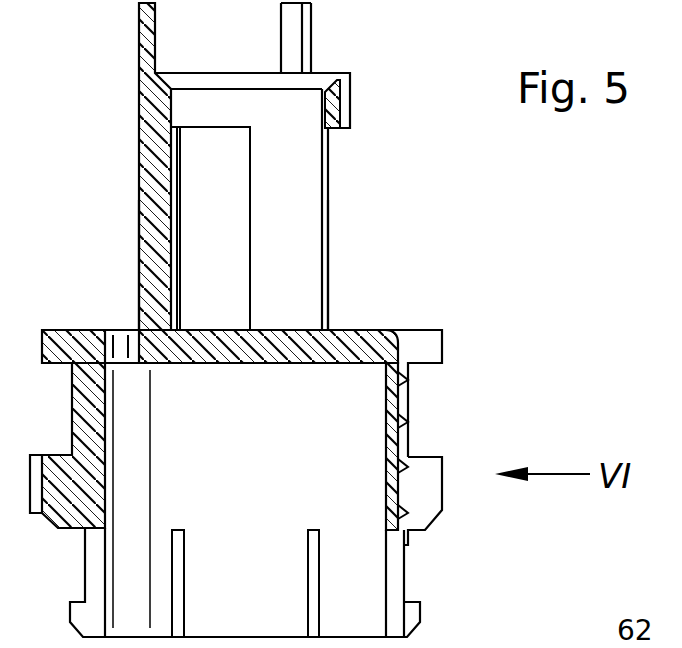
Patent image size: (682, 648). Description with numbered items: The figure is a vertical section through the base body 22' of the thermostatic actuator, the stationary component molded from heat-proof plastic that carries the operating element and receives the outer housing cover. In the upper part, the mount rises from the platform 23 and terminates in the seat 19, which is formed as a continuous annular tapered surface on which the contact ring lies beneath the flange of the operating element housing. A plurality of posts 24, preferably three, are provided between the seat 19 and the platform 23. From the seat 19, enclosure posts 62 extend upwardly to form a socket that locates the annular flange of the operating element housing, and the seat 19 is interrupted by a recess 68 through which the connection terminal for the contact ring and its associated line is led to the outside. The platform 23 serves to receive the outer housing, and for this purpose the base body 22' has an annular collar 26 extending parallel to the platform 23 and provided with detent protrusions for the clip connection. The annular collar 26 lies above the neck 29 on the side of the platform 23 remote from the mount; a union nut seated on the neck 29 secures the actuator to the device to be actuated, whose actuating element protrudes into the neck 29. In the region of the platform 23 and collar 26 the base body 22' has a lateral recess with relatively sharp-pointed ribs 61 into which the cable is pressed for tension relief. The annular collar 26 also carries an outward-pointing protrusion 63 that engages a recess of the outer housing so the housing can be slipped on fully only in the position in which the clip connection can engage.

The enclosure posts 62 is at (146, 22).
The seat 19 is at (197, 100).
The recess 68 is at (336, 82).
The base body 22' is at (186, 166).
The posts 24 is at (152, 248).
The platform 23 is at (360, 330).
The ribs 61 is at (407, 421).
The neck 29 is at (258, 477).
The annular collar 26 is at (428, 502).
The protrusion 63 is at (35, 513).